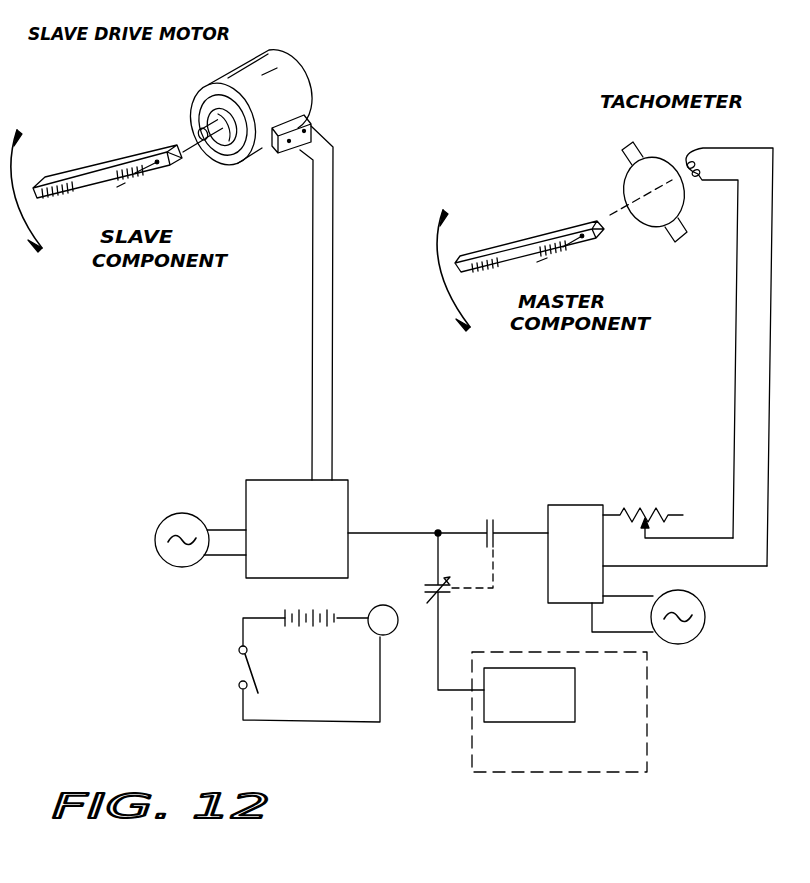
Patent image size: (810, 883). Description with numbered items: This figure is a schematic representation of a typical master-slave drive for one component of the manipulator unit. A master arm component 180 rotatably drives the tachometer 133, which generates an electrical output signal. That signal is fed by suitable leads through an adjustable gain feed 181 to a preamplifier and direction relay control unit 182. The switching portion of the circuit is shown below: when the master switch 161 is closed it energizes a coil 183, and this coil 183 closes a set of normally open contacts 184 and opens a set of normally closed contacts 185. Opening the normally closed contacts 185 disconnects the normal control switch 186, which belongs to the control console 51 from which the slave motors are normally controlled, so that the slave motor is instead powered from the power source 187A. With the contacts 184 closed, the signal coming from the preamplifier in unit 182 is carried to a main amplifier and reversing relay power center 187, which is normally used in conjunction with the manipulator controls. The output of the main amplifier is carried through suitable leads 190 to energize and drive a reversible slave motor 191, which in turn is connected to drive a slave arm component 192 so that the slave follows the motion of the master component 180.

The reversible slave motor 191 is at (285, 70).
The arm component 192 is at (90, 173).
The leads 190 is at (312, 372).
The tachometer 133 is at (620, 181).
The arm component 180 is at (508, 240).
The main amplifier and reversing relay power center 187 is at (246, 493).
The power source 187A is at (158, 553).
The normally open contacts 184 is at (492, 520).
The normally closed contacts 185 is at (452, 593).
The preamplifier and direction relay control unit 182 is at (580, 512).
The adjustable gain feed 181 is at (655, 510).
The master switch 161 is at (238, 673).
The coil 183 is at (375, 635).
The normal control switch 186 is at (528, 723).
The control console 51 is at (525, 773).